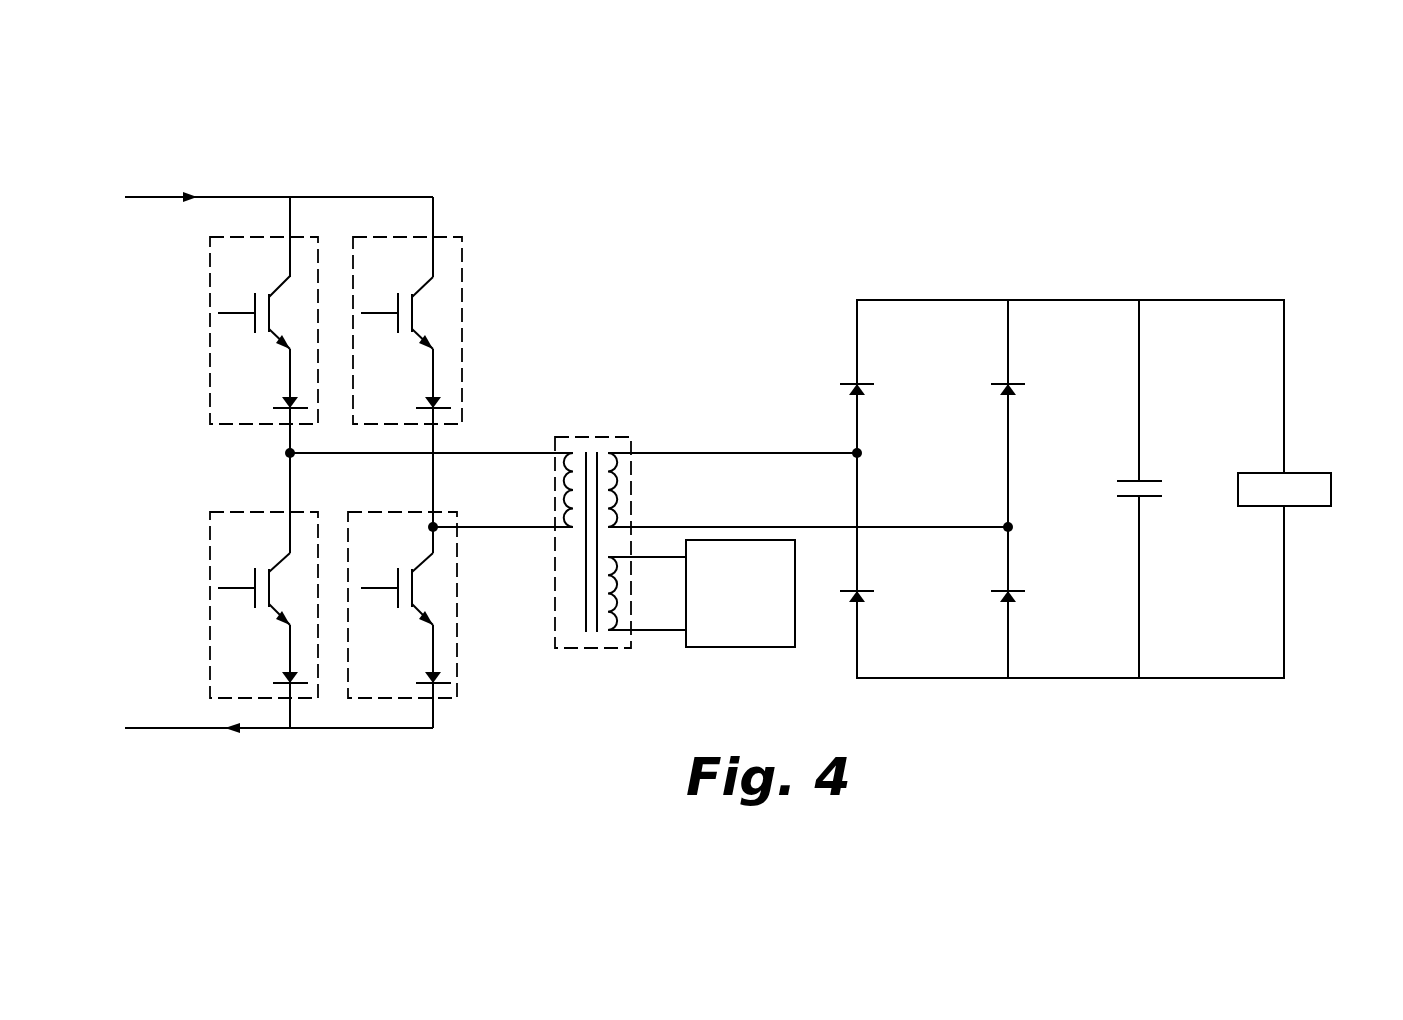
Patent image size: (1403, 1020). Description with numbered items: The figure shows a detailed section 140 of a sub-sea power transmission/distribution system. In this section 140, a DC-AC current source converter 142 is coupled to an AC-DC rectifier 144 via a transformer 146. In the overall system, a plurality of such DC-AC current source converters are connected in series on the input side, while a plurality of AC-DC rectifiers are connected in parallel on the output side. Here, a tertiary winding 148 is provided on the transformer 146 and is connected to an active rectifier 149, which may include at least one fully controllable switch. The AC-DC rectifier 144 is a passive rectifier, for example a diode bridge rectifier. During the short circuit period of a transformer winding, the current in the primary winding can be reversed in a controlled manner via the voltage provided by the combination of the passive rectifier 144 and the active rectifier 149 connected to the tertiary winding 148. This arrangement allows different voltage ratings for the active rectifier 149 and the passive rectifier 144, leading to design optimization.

The section 140 is at (1292, 132).
The DC-AC current source converter 142 is at (374, 98).
The AC-DC rectifier 144 is at (951, 263).
The transformer 146 is at (676, 349).
The tertiary winding 148 is at (607, 634).
The active rectifier 149 is at (686, 648).